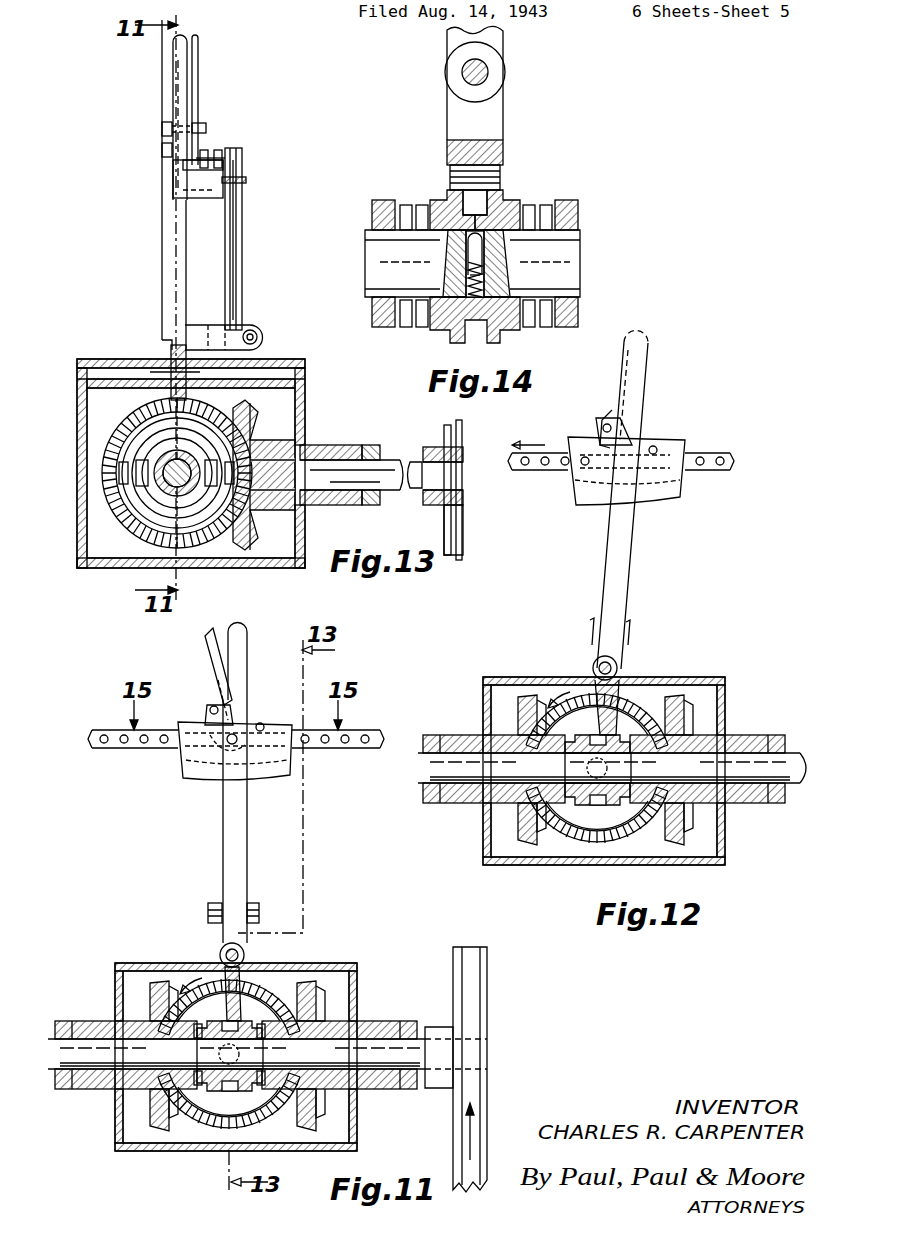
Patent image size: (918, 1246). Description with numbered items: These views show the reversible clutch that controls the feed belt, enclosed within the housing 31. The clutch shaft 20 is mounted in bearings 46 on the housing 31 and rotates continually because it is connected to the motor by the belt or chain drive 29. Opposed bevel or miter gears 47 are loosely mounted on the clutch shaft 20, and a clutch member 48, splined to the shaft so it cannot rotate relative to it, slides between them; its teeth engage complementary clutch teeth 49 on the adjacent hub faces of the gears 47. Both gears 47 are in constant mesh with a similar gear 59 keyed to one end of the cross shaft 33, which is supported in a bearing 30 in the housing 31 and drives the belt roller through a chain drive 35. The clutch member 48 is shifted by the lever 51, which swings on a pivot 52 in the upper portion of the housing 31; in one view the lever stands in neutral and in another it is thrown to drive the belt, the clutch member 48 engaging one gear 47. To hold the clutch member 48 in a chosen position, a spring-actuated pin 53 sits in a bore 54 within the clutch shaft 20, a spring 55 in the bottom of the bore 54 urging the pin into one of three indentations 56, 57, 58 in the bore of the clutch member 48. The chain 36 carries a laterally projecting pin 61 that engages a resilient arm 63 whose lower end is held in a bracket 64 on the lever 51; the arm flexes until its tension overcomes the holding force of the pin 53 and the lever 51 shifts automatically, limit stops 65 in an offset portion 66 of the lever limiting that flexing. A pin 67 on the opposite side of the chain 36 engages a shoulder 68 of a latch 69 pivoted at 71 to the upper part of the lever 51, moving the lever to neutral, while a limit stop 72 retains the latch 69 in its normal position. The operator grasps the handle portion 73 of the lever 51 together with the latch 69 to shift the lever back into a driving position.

In FIG. 13, the clutch shaft 20 is at (165, 480).
In FIG. 14, the clutch shaft 20 is at (570, 262).
In FIG. 12, the clutch shaft 20 is at (480, 795).
In FIG. 11, the clutch shaft 20 is at (90, 1085).
In FIG. 11, the belt or chain drive 29 is at (455, 1190).
In FIG. 13, the bearing 30 is at (335, 455).
In FIG. 13, the housing 31 is at (77, 437).
In FIG. 12, the housing 31 is at (720, 678).
In FIG. 11, the housing 31 is at (340, 962).
In FIG. 13, the cross shaft 33 is at (392, 458).
In FIG. 13, the chain drive 35 is at (468, 540).
In FIG. 13, the chain 36 is at (212, 150).
In FIG. 12, the chain 36 is at (528, 470).
In FIG. 11, the chain 36 is at (105, 750).
In FIG. 12, the bearings 46 is at (770, 742).
In FIG. 11, the bearings 46 is at (78, 1022).
In FIG. 13, the bevel or miter gears 47 is at (150, 495).
In FIG. 14, the bevel or miter gears 47 is at (572, 205).
In FIG. 12, the bevel or miter gears 47 is at (525, 705).
In FIG. 11, the bevel or miter gears 47 is at (160, 985).
In FIG. 13, the clutch member 48 is at (160, 505).
In FIG. 14, the clutch member 48 is at (440, 330).
In FIG. 12, the clutch member 48 is at (582, 815).
In FIG. 11, the clutch member 48 is at (213, 1098).
In FIG. 14, the clutch teeth 49 is at (528, 205).
In FIG. 11, the clutch teeth 49 is at (198, 1085).
In FIG. 13, the lever 51 is at (175, 272).
In FIG. 14, the lever 51 is at (500, 37).
In FIG. 12, the lever 51 is at (620, 575).
In FIG. 11, the lever 51 is at (240, 828).
In FIG. 13, the pivot 52 is at (118, 372).
In FIG. 14, the pivot 52 is at (487, 72).
In FIG. 12, the pivot 52 is at (618, 662).
In FIG. 11, the pivot 52 is at (222, 948).
In FIG. 14, the spring-actuated pin 53 is at (478, 250).
In FIG. 14, the bore 54 is at (500, 278).
In FIG. 14, the spring 55 is at (478, 300).
In FIG. 14, the indentation 56 is at (455, 210).
In FIG. 14, the indentation 57 is at (470, 210).
In FIG. 14, the indentation 58 is at (495, 195).
In FIG. 13, the gear 59 is at (258, 530).
In FIG. 12, the gear 59 is at (640, 840).
In FIG. 11, the gear 59 is at (262, 990).
In FIG. 13, the pin 61 is at (244, 163).
In FIG. 13, the resilient arm 63 is at (236, 283).
In FIG. 13, the bracket 64 is at (235, 335).
In FIG. 13, the limit stops 65 is at (247, 180).
In FIG. 13, the offset portion 66 is at (208, 200).
In FIG. 12, the offset portion 66 is at (678, 492).
In FIG. 11, the offset portion 66 is at (282, 772).
In FIG. 13, the pin 67 is at (186, 165).
In FIG. 12, the pin 67 is at (585, 466).
In FIG. 11, the pin 67 is at (228, 760).
In FIG. 12, the shoulder 68 is at (604, 440).
In FIG. 11, the shoulder 68 is at (200, 765).
In FIG. 13, the latch 69 is at (200, 48).
In FIG. 12, the latch 69 is at (640, 367).
In FIG. 11, the latch 69 is at (210, 650).
In FIG. 12, the pivot 71 is at (656, 447).
In FIG. 11, the pivot 71 is at (262, 723).
In FIG. 13, the limit stop 72 is at (206, 128).
In FIG. 13, the handle portion 73 is at (178, 58).
In FIG. 12, the handle portion 73 is at (648, 346).
In FIG. 11, the handle portion 73 is at (248, 632).